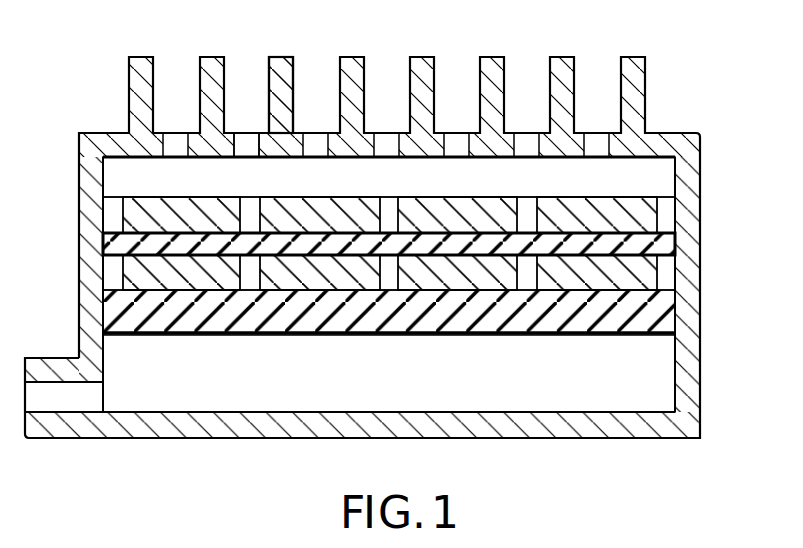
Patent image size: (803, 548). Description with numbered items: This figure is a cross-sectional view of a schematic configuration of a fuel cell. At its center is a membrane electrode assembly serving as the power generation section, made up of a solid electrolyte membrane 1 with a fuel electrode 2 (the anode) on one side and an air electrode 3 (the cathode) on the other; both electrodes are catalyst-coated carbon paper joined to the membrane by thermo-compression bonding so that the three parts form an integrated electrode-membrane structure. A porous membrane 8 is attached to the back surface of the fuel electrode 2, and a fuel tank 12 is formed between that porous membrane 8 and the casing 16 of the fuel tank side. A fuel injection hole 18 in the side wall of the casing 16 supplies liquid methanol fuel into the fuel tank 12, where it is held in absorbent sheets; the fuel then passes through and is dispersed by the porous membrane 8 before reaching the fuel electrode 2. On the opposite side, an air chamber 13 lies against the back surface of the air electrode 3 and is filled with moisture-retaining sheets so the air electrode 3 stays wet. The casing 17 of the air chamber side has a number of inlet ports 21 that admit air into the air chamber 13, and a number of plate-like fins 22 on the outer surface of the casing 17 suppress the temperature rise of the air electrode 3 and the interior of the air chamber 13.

The solid electrolyte membrane 1 is at (665, 245).
The fuel electrode 2 is at (645, 277).
The air electrode 3 is at (645, 214).
The porous membrane 8 is at (665, 314).
The fuel tank 12 is at (665, 380).
The air chamber 13 is at (660, 182).
The casing of the fuel tank side 16 is at (606, 428).
The casing of the air chamber side 17 is at (668, 137).
The fuel injection hole 18 is at (57, 405).
The inlet port 21 is at (245, 145).
The fin 22 is at (296, 108).